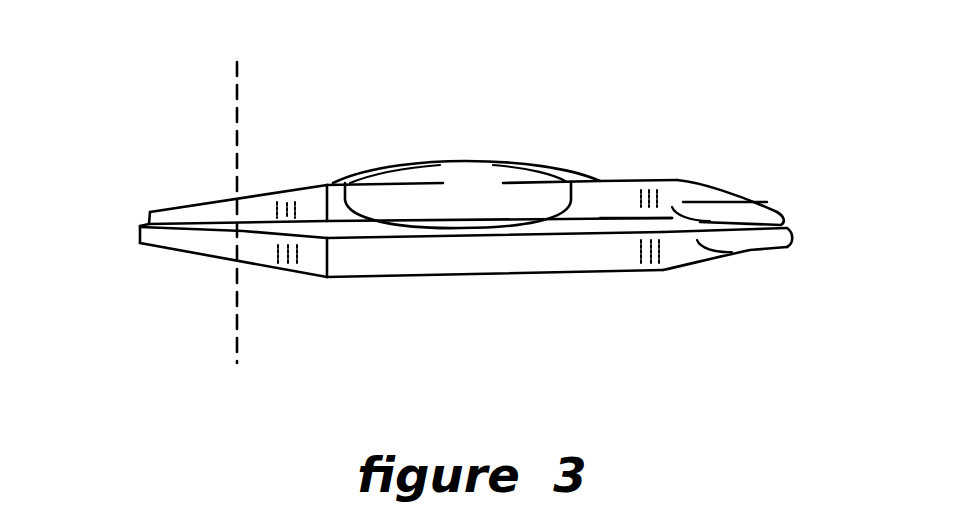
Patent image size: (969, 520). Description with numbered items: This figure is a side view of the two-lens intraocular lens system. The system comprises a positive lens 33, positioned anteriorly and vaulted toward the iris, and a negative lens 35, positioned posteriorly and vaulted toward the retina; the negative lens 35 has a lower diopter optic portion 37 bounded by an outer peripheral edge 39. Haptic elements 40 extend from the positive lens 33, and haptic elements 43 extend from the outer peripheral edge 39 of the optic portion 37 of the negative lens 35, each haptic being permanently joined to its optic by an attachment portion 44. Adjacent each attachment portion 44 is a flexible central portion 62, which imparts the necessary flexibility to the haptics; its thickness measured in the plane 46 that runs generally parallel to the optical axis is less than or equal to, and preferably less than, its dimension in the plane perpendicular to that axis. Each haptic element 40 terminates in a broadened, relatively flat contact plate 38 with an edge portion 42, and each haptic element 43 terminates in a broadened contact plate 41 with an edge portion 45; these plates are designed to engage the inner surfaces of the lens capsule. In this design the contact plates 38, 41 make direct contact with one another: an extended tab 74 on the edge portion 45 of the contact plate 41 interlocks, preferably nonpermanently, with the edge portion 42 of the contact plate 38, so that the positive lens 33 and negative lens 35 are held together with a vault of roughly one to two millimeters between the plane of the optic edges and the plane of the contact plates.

The positive lens 33 is at (560, 172).
The negative lens 35 is at (664, 270).
The lower diopter optic portion 37 is at (473, 276).
The contact plate 38 is at (148, 212).
The outer peripheral edge 39 is at (349, 277).
The haptic element 40 is at (255, 193).
The contact plate 41 is at (140, 243).
The edge portion 42 is at (640, 203).
The haptic element 43 is at (210, 255).
The attachment portion 44 is at (337, 187).
The edge portion 45 is at (700, 245).
The plane 46- 46 is at (237, 218).
The flexible central portion 62 is at (287, 210).
The extended tab 74 is at (149, 224).